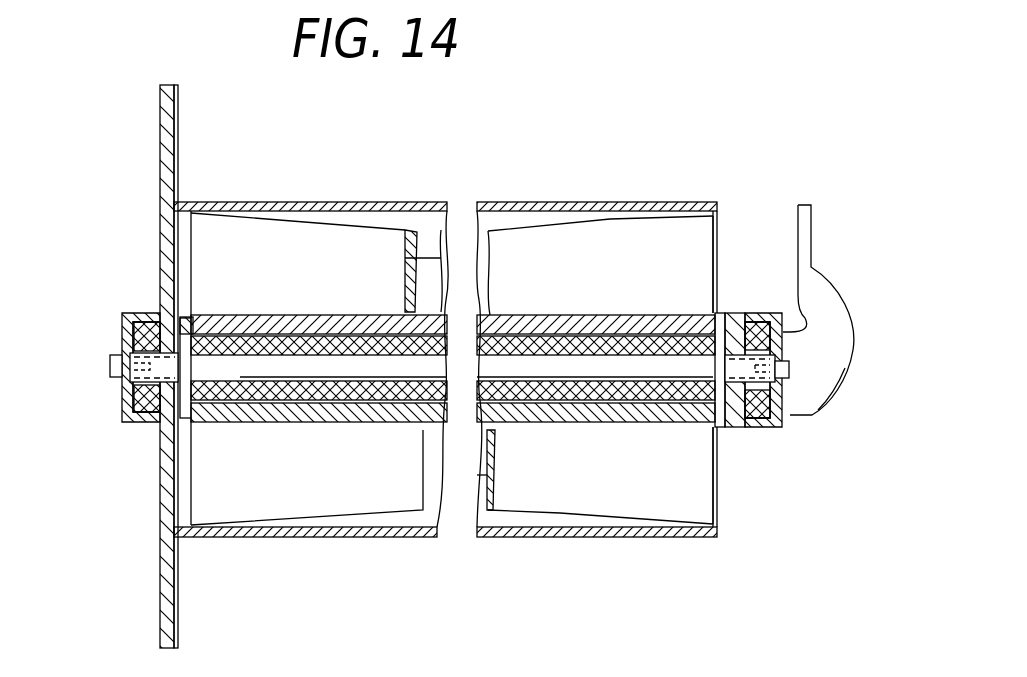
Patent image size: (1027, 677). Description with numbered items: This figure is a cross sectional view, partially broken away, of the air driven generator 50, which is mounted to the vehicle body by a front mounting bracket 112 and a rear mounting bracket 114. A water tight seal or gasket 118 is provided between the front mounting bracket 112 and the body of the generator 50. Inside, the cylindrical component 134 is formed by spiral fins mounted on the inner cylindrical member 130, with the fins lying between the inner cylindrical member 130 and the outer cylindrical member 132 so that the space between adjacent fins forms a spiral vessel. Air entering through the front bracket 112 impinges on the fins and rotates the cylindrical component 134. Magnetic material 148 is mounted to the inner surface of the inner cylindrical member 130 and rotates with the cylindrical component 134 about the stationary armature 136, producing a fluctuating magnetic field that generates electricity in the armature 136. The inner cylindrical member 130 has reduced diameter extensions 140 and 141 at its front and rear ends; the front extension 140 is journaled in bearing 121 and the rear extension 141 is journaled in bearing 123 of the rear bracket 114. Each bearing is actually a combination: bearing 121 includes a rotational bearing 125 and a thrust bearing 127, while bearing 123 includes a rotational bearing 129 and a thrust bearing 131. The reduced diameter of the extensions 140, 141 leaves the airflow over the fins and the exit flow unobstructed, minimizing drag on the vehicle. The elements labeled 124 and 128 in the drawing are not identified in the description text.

The generator 50 is at (445, 358).
The front mounting bracket 112 is at (162, 110).
The rear mounting bracket 114 is at (830, 272).
The water tight seal or gasket 118 is at (178, 112).
The bearing 121 is at (120, 418).
The bearing 123 is at (780, 429).
The end wall 124 is at (705, 243).
The rotational bearing 125 is at (143, 424).
The thrust bearing 127 is at (126, 348).
The bottom housing wall 128 is at (605, 522).
The rotational bearing 129 is at (752, 429).
The inner cylindrical member 130 is at (262, 268).
The thrust bearing 131 is at (788, 395).
The outer cylindrical member 132 is at (379, 200).
The cylindrical component 134 is at (303, 312).
The stationary armature 136 is at (398, 423).
The extension 140 is at (141, 312).
The extension 141 is at (775, 268).
The magnetic material 148 is at (478, 312).